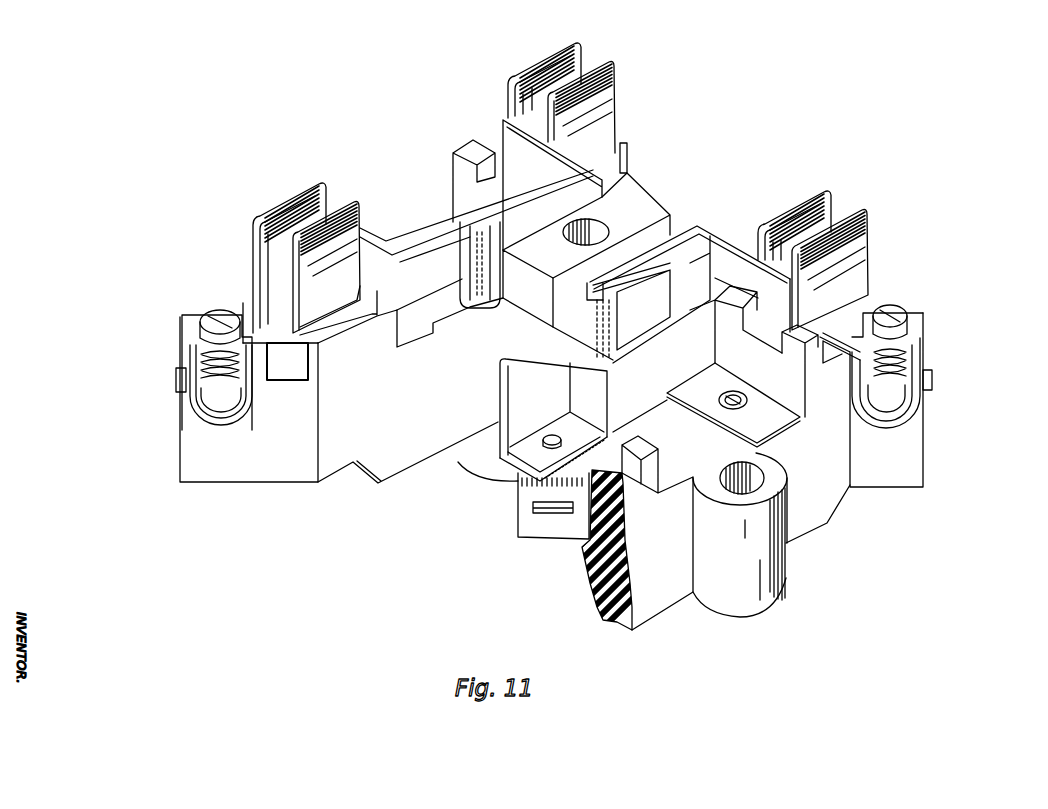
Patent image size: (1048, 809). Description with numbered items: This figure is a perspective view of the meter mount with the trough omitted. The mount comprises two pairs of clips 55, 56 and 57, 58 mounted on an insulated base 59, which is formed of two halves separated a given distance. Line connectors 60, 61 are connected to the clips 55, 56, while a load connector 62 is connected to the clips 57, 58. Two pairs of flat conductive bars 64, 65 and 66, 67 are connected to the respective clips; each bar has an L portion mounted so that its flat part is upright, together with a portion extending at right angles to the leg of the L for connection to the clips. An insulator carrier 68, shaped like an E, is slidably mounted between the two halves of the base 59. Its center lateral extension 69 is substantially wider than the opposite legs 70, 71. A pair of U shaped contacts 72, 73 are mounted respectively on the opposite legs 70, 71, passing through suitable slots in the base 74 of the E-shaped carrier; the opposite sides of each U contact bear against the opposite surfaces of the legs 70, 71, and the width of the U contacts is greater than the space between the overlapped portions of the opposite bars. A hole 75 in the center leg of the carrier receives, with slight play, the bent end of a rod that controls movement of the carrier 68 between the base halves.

The clip 55 is at (500, 450).
The clip 56 is at (268, 217).
The clip 57 is at (865, 243).
The clip 58 is at (578, 48).
The insulated base 59 is at (329, 456).
The line connector 60 is at (518, 495).
The line connector 61 is at (181, 312).
The load connector 62 is at (927, 337).
The flat conductive bar 64 is at (608, 388).
The flat conductive bar 65 is at (388, 238).
The flat conductive bar 66 is at (728, 226).
The flat conductive bar 67 is at (553, 145).
The insulator carrier 68 is at (530, 308).
The center lateral extension 69 is at (648, 206).
The leg 70 is at (727, 273).
The leg 71 is at (460, 280).
The U shaped contact 72 is at (640, 348).
The U shaped contact 73 is at (445, 222).
The base of the E shaped carrier 74 is at (490, 310).
The hole 75 is at (598, 222).